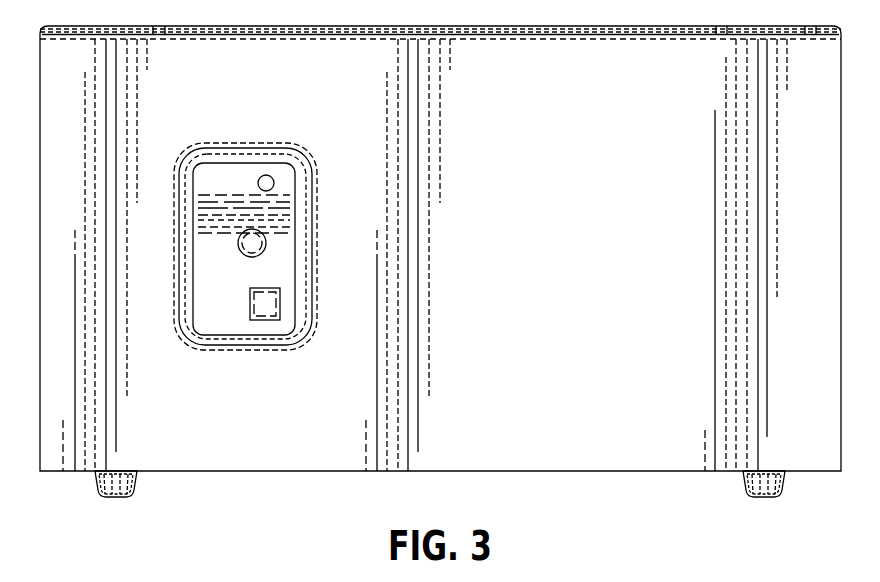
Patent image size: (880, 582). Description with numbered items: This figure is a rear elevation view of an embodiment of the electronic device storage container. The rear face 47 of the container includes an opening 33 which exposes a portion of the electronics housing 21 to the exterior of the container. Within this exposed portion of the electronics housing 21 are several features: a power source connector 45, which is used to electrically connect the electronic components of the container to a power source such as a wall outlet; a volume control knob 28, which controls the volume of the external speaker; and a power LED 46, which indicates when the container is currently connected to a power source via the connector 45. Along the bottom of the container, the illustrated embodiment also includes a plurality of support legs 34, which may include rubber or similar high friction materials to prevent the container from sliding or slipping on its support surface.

The electronics housing 21 is at (203, 283).
The volume control knob 28 is at (266, 243).
The opening 33 is at (230, 163).
The support legs 34 is at (137, 478).
The power source connector 45 is at (268, 320).
The power LED 46 is at (274, 183).
The rear face 47 is at (597, 243).